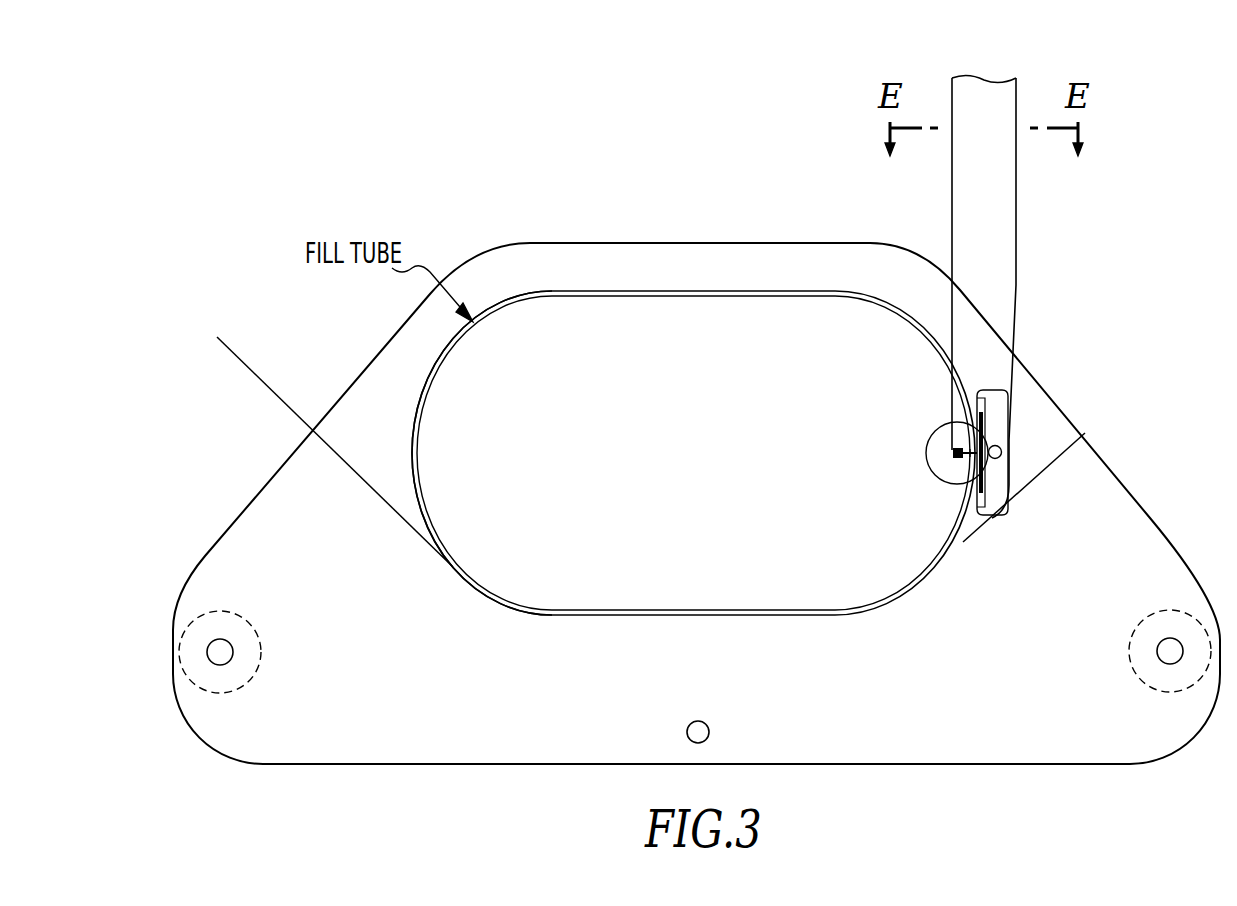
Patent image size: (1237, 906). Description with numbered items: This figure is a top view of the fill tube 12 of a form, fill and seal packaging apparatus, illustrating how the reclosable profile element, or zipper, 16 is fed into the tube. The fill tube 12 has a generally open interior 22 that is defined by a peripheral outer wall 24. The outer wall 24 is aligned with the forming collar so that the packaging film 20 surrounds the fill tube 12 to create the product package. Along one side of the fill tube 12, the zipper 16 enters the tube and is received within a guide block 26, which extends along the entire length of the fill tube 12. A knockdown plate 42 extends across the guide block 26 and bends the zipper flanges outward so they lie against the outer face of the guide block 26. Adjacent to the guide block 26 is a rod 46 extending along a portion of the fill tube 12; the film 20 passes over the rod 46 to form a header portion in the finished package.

The fill tube 12 is at (646, 290).
The reclosable profile element 16 is at (993, 82).
The packaging film 20 is at (248, 368).
The open interior 22 is at (690, 327).
The peripheral outer wall 24 is at (425, 385).
The guide block 26 is at (937, 465).
The knockdown plate 42 is at (960, 378).
The rod 46 is at (1000, 450).